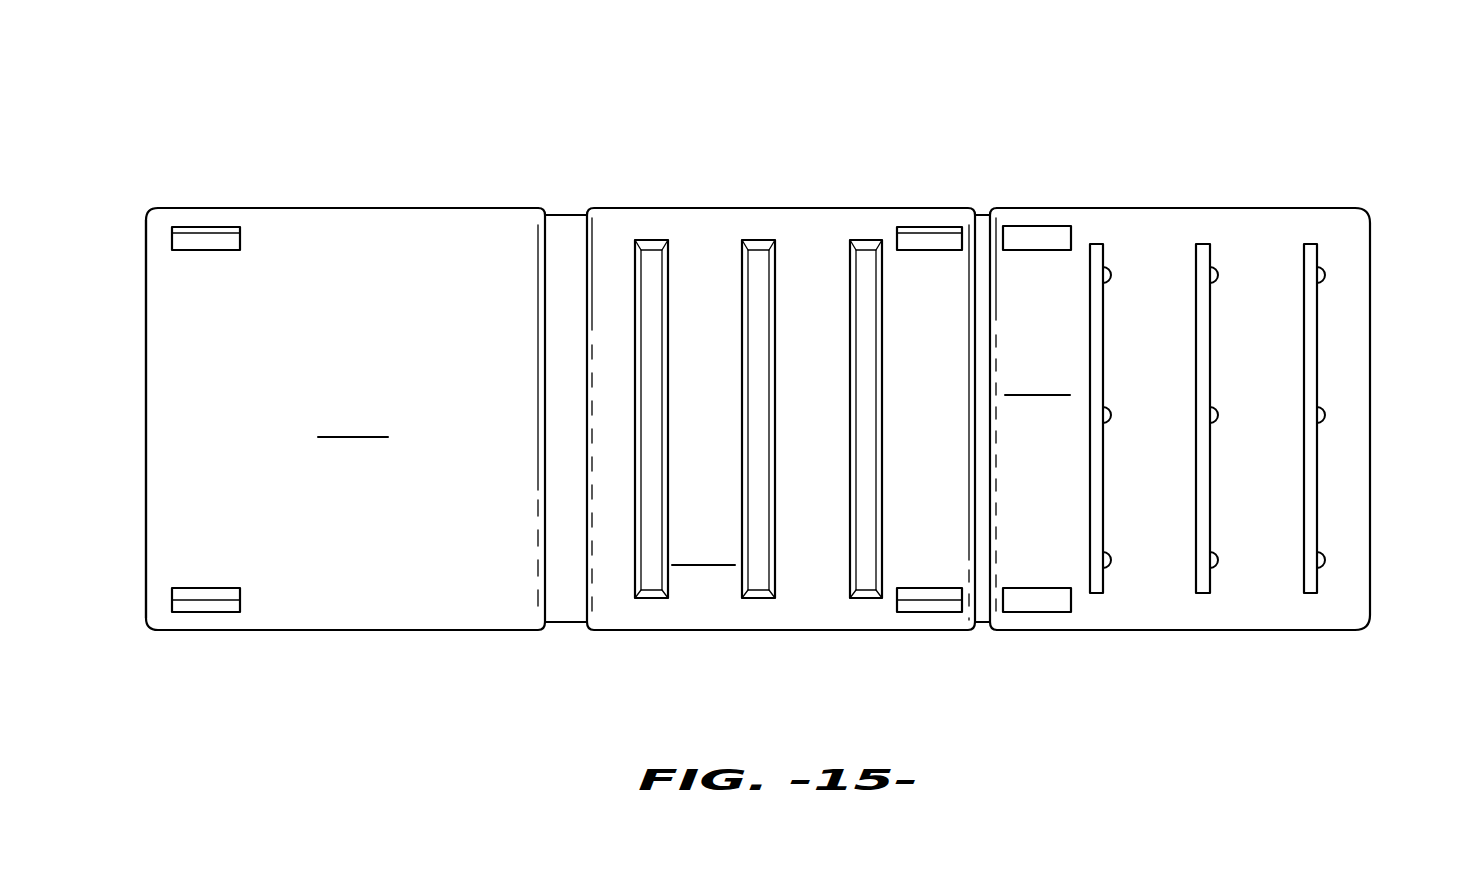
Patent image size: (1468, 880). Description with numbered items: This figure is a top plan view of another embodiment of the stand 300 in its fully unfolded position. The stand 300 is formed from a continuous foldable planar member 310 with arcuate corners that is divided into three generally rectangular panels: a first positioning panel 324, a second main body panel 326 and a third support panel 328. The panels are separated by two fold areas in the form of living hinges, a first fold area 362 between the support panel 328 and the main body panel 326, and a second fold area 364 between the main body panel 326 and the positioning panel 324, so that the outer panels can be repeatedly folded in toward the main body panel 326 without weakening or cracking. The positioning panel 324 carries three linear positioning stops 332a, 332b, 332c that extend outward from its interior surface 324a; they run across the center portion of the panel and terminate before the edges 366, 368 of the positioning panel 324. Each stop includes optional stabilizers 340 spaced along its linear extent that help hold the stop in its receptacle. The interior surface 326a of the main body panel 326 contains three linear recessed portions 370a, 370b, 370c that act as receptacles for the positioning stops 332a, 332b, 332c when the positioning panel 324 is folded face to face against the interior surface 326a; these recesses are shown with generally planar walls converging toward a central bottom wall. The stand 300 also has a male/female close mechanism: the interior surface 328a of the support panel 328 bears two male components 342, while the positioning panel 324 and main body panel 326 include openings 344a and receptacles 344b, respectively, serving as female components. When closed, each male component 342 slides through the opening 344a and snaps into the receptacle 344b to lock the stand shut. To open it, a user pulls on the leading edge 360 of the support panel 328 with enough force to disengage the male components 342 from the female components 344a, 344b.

The stand 300 is at (1174, 116).
The continuous foldable planar member 310 is at (340, 208).
The first positioning panel 324 is at (1312, 213).
The interior surface of positioning panel 324a is at (1040, 378).
The second main body panel 326 is at (817, 218).
The interior surface of main body panel 326a is at (707, 548).
The third support panel 328 is at (355, 598).
The interior surface of support panel 328a is at (353, 419).
The first linear positioning stop 332a is at (1097, 598).
The second linear positioning stop 332b is at (1203, 597).
The third linear positioning stop 332c is at (1310, 597).
The stabilizers 340 is at (1325, 279).
The male components 342 is at (212, 242).
The opening in positioning panel 344a is at (1045, 237).
The receptacle in main body panel 344b is at (930, 242).
The leading edge of support panel 360 is at (146, 343).
The first fold area 362 is at (566, 215).
The second fold area 364 is at (986, 213).
The edge of positioning panel 366 is at (1233, 206).
The edge of positioning panel 368 is at (1265, 630).
The first linear recessed portion 370a is at (650, 247).
The second linear recessed portion 370b is at (755, 247).
The third linear recessed portion 370c is at (865, 247).